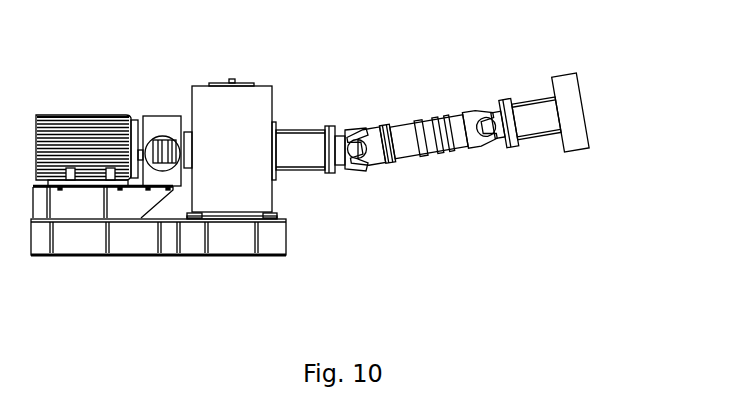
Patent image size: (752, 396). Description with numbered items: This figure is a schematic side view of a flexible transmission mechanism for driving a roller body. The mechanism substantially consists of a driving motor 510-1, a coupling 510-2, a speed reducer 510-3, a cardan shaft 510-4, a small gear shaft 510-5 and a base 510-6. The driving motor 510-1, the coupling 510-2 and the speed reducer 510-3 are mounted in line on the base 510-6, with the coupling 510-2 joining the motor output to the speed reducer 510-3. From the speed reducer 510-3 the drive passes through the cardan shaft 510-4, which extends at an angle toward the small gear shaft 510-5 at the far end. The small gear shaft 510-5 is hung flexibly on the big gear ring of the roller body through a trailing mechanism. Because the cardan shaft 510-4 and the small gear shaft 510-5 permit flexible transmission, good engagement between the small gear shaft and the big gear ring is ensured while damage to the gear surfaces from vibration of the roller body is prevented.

The driving motor 510-1 is at (62, 138).
The coupling 510-2 is at (162, 162).
The speed reducer 510-3 is at (241, 142).
The cardan shaft 510-4 is at (443, 140).
The small gear shaft 510-5 is at (567, 92).
The base 510-6 is at (235, 240).